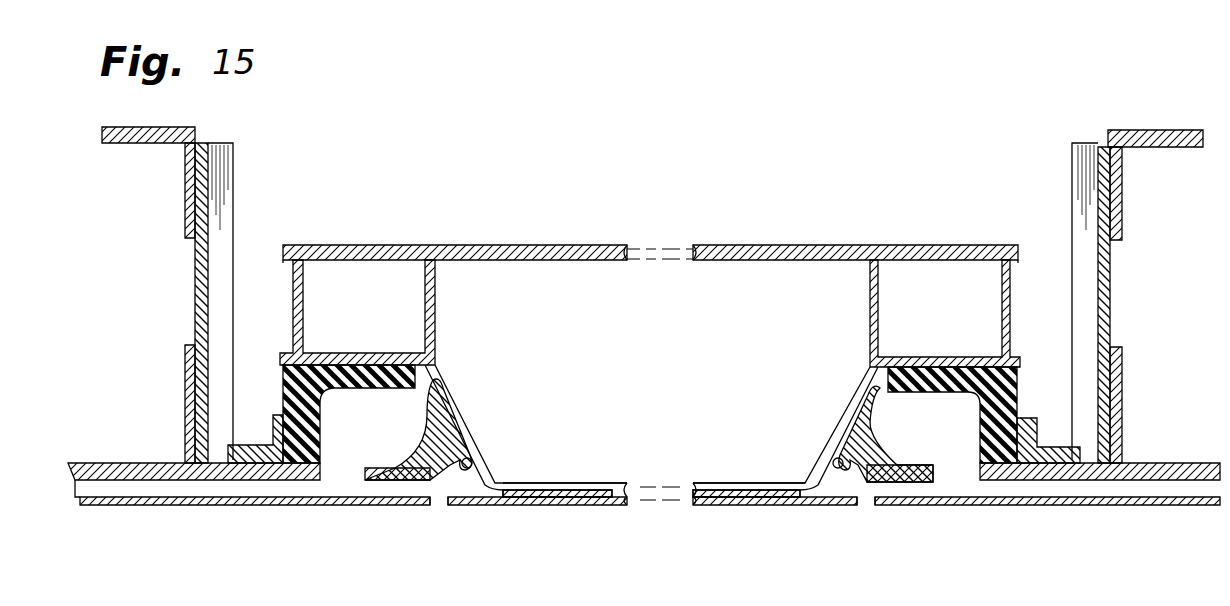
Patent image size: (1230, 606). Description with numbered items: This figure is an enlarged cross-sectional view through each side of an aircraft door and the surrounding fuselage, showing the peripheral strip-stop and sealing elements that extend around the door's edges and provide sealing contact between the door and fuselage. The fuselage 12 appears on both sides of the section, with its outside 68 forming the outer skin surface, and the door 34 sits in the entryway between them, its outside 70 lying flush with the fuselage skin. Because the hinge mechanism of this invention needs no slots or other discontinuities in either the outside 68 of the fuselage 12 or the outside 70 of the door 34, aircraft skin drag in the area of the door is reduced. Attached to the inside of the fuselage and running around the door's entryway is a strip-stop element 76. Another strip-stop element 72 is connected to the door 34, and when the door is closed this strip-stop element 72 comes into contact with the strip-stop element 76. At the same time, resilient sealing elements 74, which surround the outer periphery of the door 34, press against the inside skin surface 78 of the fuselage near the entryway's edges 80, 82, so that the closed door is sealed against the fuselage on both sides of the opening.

The fuselage 12 is at (160, 483).
The door 34 is at (760, 246).
The outside of the fuselage 68 is at (307, 504).
The outside of the door 70 is at (578, 503).
The strip-stop element 72 is at (310, 376).
The resilient sealing element 74 is at (450, 428).
The strip-stop element 76 is at (273, 410).
The inside skin surface of the fuselage 78 is at (353, 470).
The entryway edge 80 is at (433, 493).
The entryway edge 82 is at (868, 505).